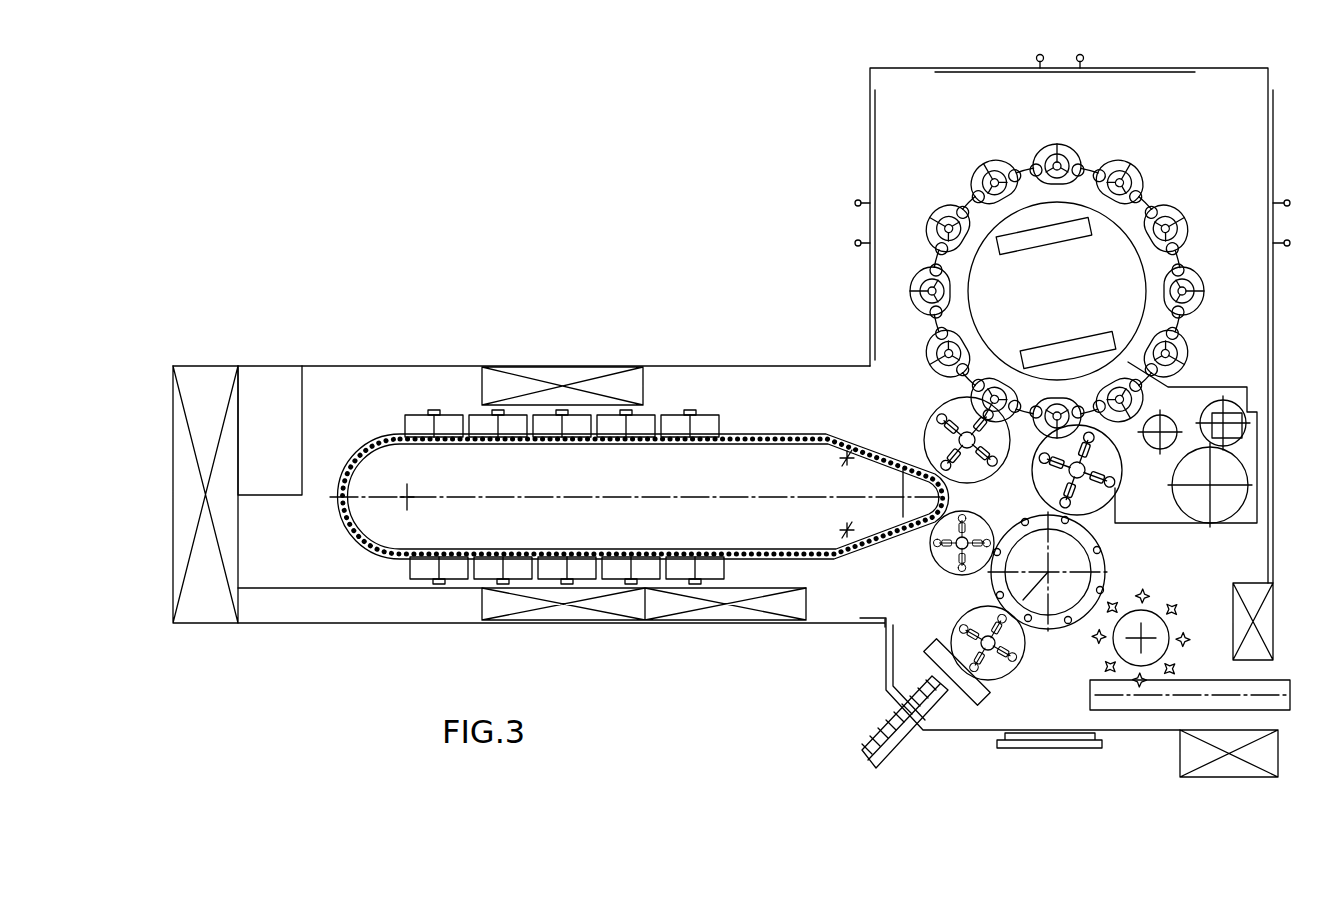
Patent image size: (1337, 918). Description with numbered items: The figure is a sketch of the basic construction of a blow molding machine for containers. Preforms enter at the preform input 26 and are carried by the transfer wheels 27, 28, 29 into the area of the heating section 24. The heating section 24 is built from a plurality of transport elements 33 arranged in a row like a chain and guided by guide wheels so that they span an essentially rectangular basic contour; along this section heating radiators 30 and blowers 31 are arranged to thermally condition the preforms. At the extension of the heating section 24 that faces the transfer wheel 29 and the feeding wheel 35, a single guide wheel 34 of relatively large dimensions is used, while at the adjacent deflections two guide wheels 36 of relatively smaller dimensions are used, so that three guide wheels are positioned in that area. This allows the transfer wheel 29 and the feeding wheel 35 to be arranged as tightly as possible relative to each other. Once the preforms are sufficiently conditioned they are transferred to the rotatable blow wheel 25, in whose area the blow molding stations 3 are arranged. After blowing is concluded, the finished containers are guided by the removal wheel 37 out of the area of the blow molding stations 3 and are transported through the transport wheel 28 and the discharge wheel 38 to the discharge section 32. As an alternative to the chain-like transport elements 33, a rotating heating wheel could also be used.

The blow molding stations 3 is at (980, 279).
The heating section 24 is at (676, 503).
The blow wheel 25 is at (993, 190).
The preform input 26 is at (915, 740).
The transfer wheel 27 is at (1003, 680).
The transfer wheel 28 is at (1050, 628).
The transfer wheel 29 is at (942, 567).
The heating radiators 30 is at (452, 416).
The blowers 31 is at (553, 378).
The discharge section 32 is at (1283, 706).
The transport elements 33 is at (380, 556).
The guide wheel 34 is at (407, 497).
The feeding wheel 35 is at (943, 397).
The guide wheels 36 is at (847, 458).
The removal wheel 37 is at (1110, 480).
The discharge wheel 38 is at (1152, 650).